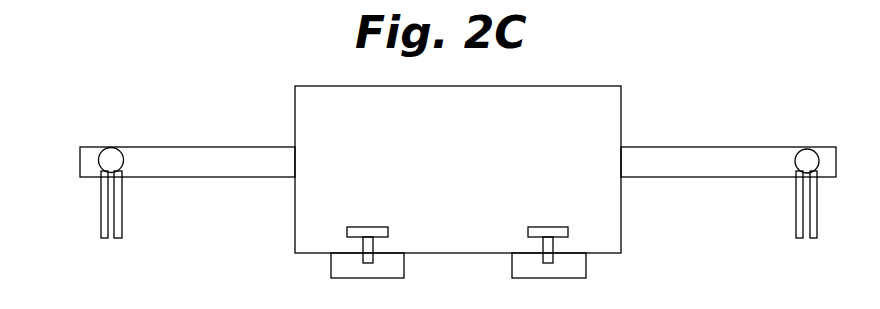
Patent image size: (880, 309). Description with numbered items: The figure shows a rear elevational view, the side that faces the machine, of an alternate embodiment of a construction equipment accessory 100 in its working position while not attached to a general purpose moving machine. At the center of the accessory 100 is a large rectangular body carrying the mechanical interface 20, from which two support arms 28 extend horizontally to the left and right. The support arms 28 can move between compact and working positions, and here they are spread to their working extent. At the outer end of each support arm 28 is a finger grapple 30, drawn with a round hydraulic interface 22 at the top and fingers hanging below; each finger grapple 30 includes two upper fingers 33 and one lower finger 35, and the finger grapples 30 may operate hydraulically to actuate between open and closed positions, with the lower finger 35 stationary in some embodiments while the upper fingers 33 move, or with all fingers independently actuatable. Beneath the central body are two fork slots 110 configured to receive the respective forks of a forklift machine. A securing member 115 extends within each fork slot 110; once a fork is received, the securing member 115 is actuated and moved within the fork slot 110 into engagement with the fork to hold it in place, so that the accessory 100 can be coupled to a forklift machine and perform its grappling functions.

The construction equipment accessory 100 is at (675, 107).
The mechanical interface 20 is at (553, 105).
The support arms 28 is at (202, 162).
The finger grapples 30 is at (88, 193).
The hydraulic interface 22 is at (113, 157).
The upper fingers 33 is at (100, 227).
The lower finger 35 is at (123, 213).
The securing member 115 is at (349, 227).
The fork slots 110 is at (330, 268).